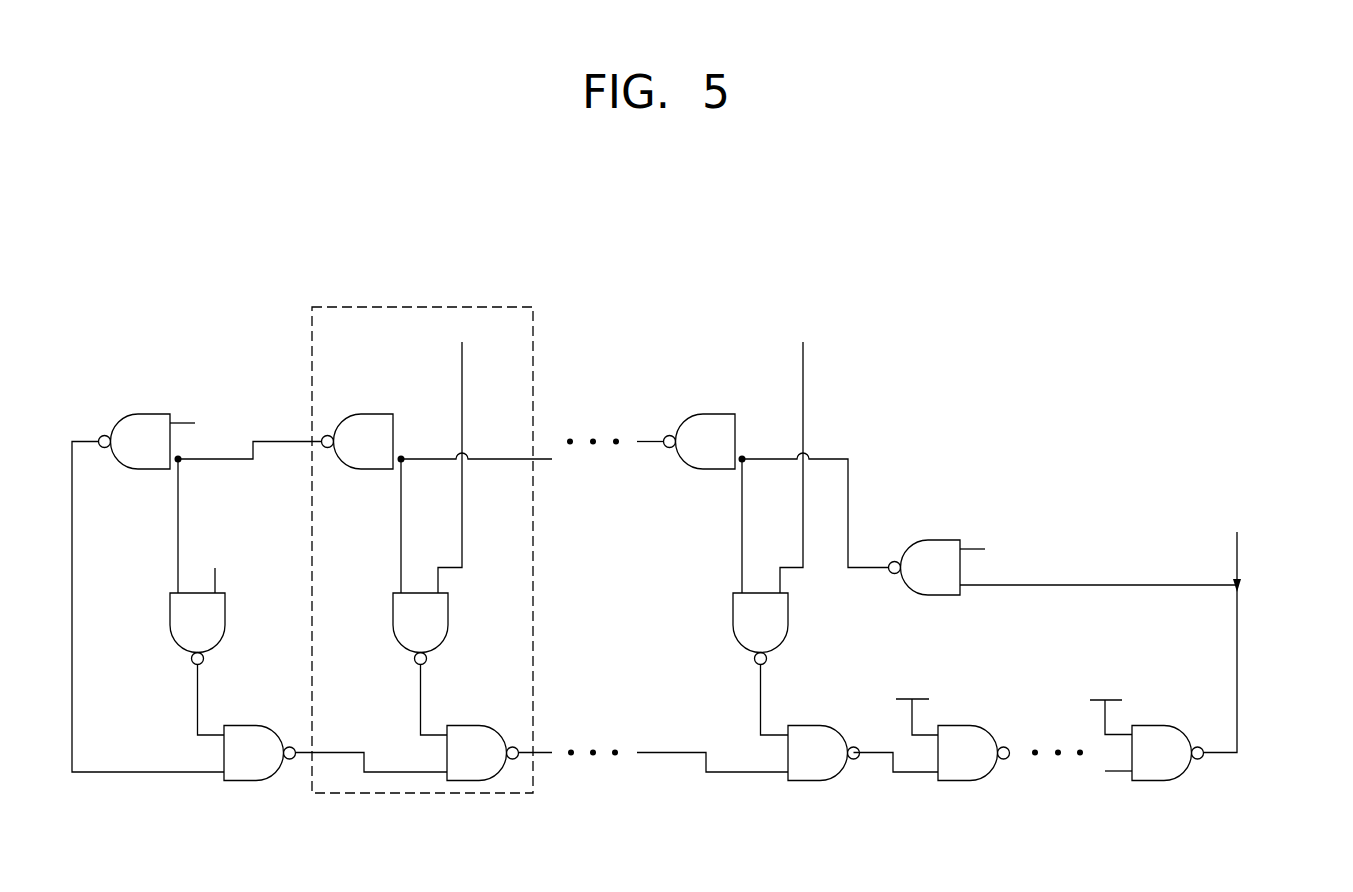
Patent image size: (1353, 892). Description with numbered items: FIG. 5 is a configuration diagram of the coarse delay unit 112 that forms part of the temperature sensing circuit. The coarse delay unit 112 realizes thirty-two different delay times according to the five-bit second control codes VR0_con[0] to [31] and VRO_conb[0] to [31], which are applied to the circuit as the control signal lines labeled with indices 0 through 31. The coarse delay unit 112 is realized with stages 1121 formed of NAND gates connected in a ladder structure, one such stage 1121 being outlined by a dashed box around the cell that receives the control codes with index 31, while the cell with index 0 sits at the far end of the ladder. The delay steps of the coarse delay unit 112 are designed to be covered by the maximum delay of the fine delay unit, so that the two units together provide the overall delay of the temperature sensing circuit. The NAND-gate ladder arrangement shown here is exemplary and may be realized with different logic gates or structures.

The coarse delay unit 112 is at (1232, 219).
The stages 1121 is at (463, 306).
The delay cell control input VRO_con[31] 31 is at (419, 382).
The delay cell control input VRO_con[0] 0 is at (761, 382).